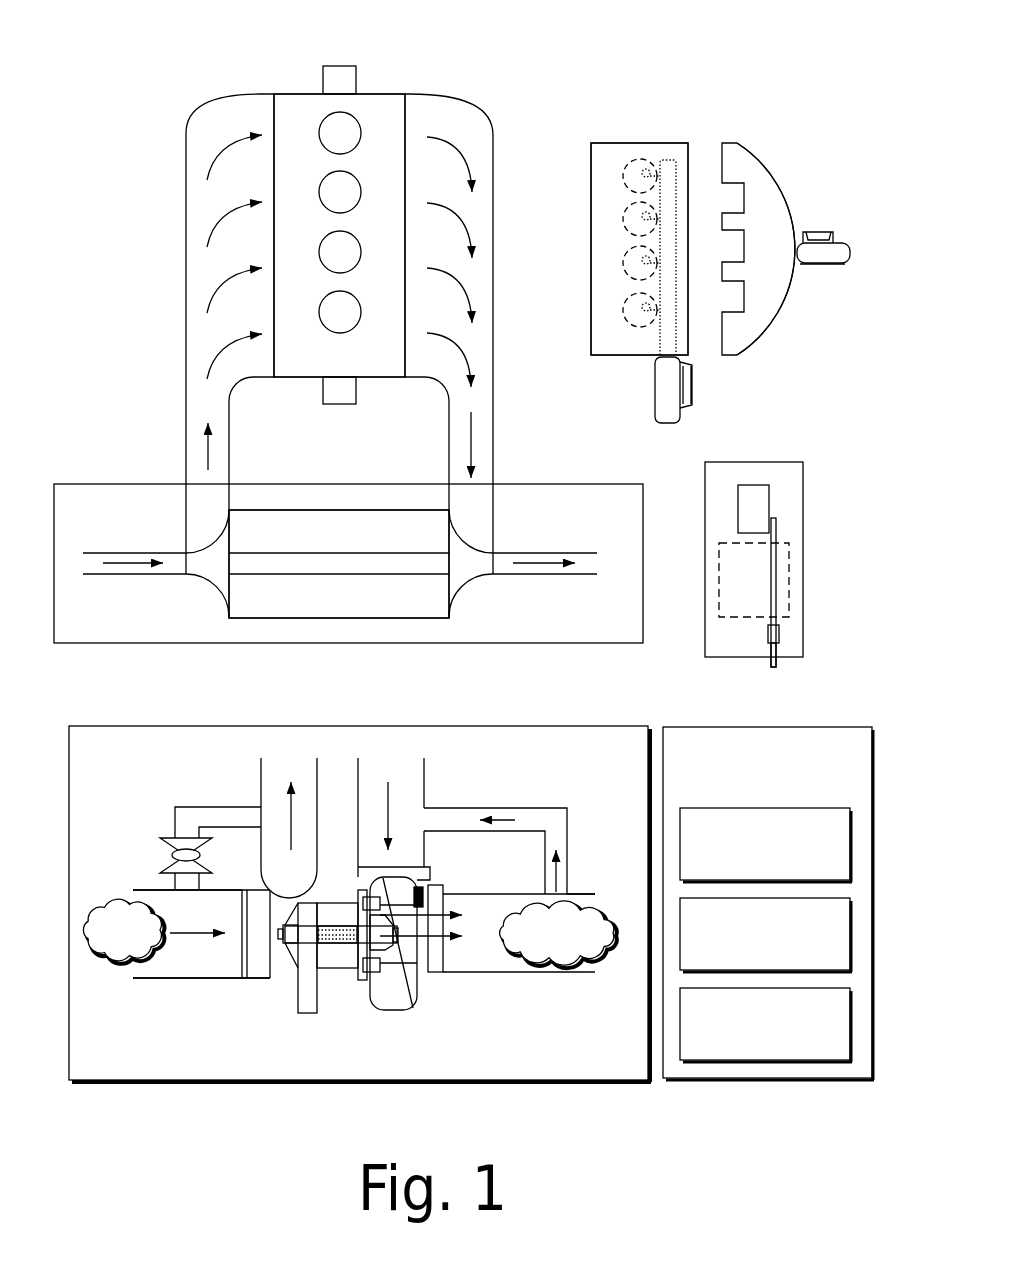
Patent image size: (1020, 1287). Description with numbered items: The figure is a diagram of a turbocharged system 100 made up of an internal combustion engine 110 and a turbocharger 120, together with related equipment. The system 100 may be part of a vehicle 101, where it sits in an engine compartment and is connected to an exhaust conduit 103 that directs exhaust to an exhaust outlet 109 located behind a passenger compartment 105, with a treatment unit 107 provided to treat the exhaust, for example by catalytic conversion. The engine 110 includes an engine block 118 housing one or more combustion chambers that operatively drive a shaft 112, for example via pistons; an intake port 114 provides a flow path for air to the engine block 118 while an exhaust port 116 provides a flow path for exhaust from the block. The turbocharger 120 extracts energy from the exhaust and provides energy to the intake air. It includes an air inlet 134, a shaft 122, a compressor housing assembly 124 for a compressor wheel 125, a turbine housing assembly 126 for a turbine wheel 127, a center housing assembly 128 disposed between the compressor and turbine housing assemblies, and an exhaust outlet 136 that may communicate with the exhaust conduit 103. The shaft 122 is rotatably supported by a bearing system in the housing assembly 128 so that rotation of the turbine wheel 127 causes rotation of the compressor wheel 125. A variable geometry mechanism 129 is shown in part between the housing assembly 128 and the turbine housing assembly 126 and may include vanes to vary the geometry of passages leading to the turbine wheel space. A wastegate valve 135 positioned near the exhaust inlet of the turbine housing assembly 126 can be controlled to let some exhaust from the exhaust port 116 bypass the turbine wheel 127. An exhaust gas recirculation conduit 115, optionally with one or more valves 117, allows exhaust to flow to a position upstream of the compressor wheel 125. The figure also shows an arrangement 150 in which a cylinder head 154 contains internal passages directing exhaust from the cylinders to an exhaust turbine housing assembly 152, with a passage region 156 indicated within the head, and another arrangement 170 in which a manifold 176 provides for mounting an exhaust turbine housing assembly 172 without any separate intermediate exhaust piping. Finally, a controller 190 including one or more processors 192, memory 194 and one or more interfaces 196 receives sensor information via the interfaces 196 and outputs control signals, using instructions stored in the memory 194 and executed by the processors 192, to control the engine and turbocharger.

The turbocharged system 100 is at (480, 50).
The vehicle 101 is at (783, 443).
The exhaust conduit 103 is at (776, 535).
The passenger compartment 105 is at (789, 567).
The treatment unit 107 is at (779, 635).
The exhaust outlet 109 is at (776, 665).
The internal combustion engine 110 is at (305, 93).
The shaft 112 is at (340, 65).
The intake port 114 is at (205, 112).
The exhaust gas recirculation (EGR) conduit 115 is at (187, 807).
The exhaust port 116 is at (475, 108).
The valve 117 is at (170, 840).
The engine block 118 is at (342, 376).
The turbocharger 120 is at (545, 484).
The shaft 122 is at (337, 577).
The compressor housing assembly 124 is at (213, 583).
The compressor wheel 125 is at (305, 958).
The turbine housing assembly 126 is at (468, 582).
The turbine wheel 127 is at (383, 950).
The center housing assembly 128 is at (375, 1054).
The variable geometry mechanism 129 is at (365, 982).
The air inlet 134 is at (152, 552).
The wastegate valve 135 is at (420, 888).
The exhaust outlet 136 is at (547, 553).
The arrangement 150 is at (638, 129).
The exhaust turbine housing assembly 152 is at (657, 380).
The cylinder head 154 is at (591, 227).
The exhaust manifold 156 is at (669, 160).
The arrangement 170 is at (772, 138).
The exhaust turbine housing assembly 172 is at (817, 263).
The manifold 176 is at (778, 312).
The controller 190 is at (748, 795).
The processors 192 is at (748, 865).
The memory 194 is at (748, 956).
The interfaces 196 is at (748, 1046).